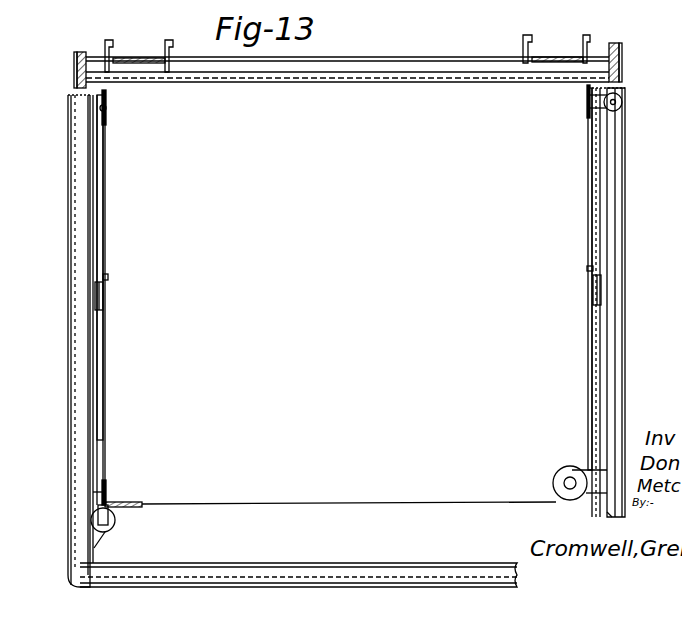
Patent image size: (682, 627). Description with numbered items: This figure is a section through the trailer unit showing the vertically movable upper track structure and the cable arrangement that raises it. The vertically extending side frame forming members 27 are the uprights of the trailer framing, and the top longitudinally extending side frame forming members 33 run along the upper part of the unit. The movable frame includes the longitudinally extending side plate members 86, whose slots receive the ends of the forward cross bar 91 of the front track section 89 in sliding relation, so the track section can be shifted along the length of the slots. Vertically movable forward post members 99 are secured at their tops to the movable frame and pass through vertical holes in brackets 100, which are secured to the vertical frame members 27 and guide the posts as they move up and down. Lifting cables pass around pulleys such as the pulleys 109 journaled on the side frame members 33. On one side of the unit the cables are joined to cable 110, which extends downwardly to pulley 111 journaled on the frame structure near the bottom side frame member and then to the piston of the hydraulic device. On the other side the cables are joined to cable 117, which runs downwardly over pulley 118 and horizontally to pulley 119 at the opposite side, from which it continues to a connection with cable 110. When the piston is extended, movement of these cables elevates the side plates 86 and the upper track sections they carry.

The vertical frame member 27 is at (72, 332).
The top longitudinally extending side frame forming member 33 is at (100, 108).
The side plate member 86 is at (84, 52).
The front track section 89 is at (150, 40).
The forward cross bar 91 is at (416, 62).
The forward post member 99 is at (102, 180).
The bracket 100 is at (103, 294).
The pulley 109 is at (106, 117).
The cable 110 is at (105, 372).
The pulley 111 is at (106, 484).
The cable 117 is at (443, 492).
The pulley 118 is at (560, 470).
The pulley 119 is at (124, 502).